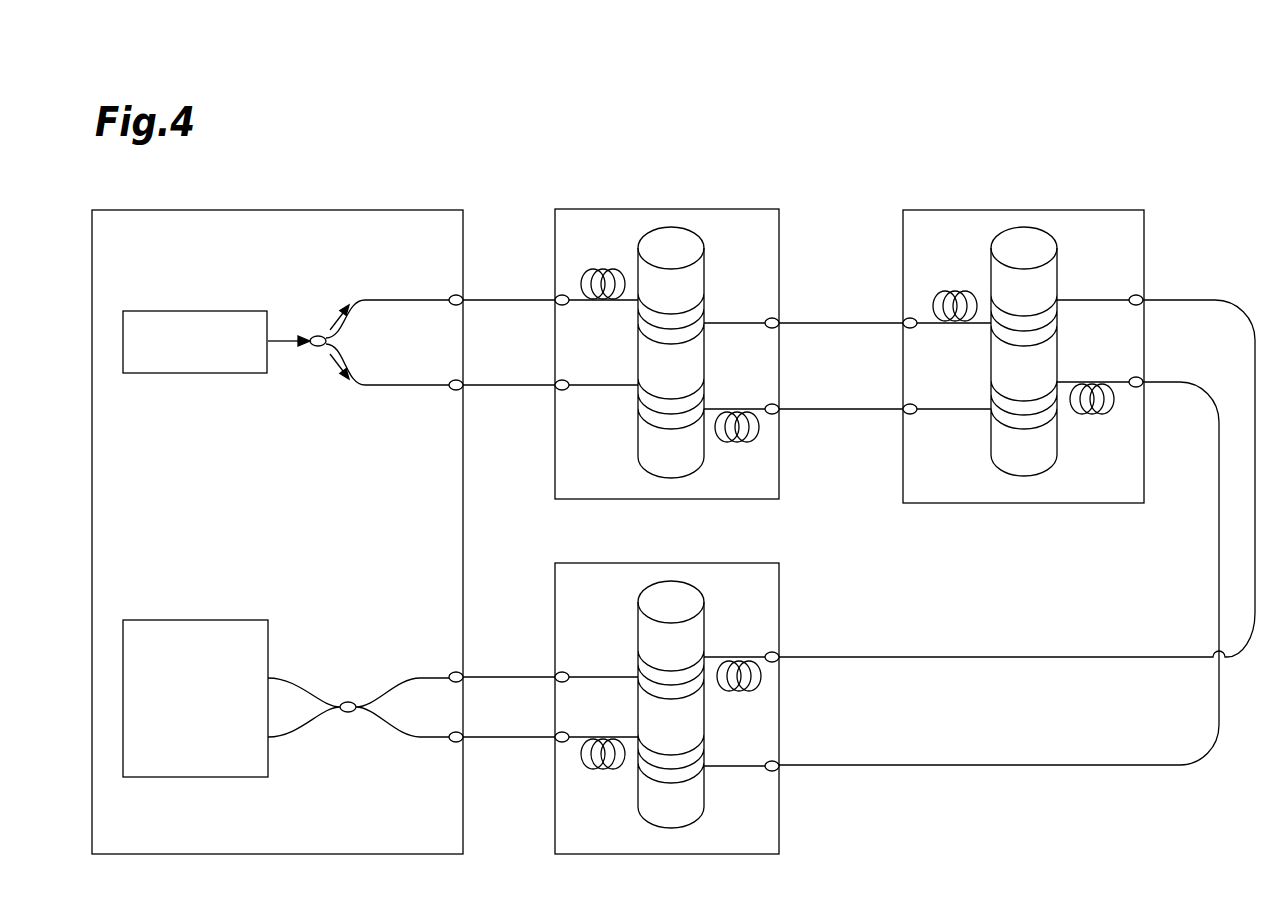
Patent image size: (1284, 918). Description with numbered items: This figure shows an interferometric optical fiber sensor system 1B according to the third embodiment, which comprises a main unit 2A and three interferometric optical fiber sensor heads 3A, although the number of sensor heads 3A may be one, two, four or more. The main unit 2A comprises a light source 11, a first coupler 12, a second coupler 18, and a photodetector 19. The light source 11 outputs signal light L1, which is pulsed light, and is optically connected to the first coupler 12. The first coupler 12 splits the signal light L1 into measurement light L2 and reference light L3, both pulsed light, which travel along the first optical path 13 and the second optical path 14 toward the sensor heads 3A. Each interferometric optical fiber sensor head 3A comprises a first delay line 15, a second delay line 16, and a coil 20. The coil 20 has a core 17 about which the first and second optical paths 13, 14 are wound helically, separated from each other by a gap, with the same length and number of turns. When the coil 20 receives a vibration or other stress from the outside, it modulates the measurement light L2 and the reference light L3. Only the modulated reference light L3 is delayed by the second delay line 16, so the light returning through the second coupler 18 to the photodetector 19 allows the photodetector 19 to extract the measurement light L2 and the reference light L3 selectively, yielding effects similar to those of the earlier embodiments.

The interferometric optical fiber sensor system 1B is at (1007, 146).
The main unit 2A is at (360, 210).
The interferometric optical fiber sensor head 3A is at (727, 209).
The light source 11 is at (195, 311).
The first coupler 12 is at (315, 335).
The first optical path 13 is at (407, 300).
The second optical path 14 is at (407, 385).
The first delay line 15 is at (602, 268).
The second delay line 16 is at (735, 444).
The core 17 is at (686, 248).
The second coupler 18 is at (347, 700).
The photodetector 19 is at (194, 620).
The coil 20 is at (713, 270).
The signal light L1 is at (289, 329).
The measurement light L2 is at (330, 322).
The reference light L3 is at (328, 358).